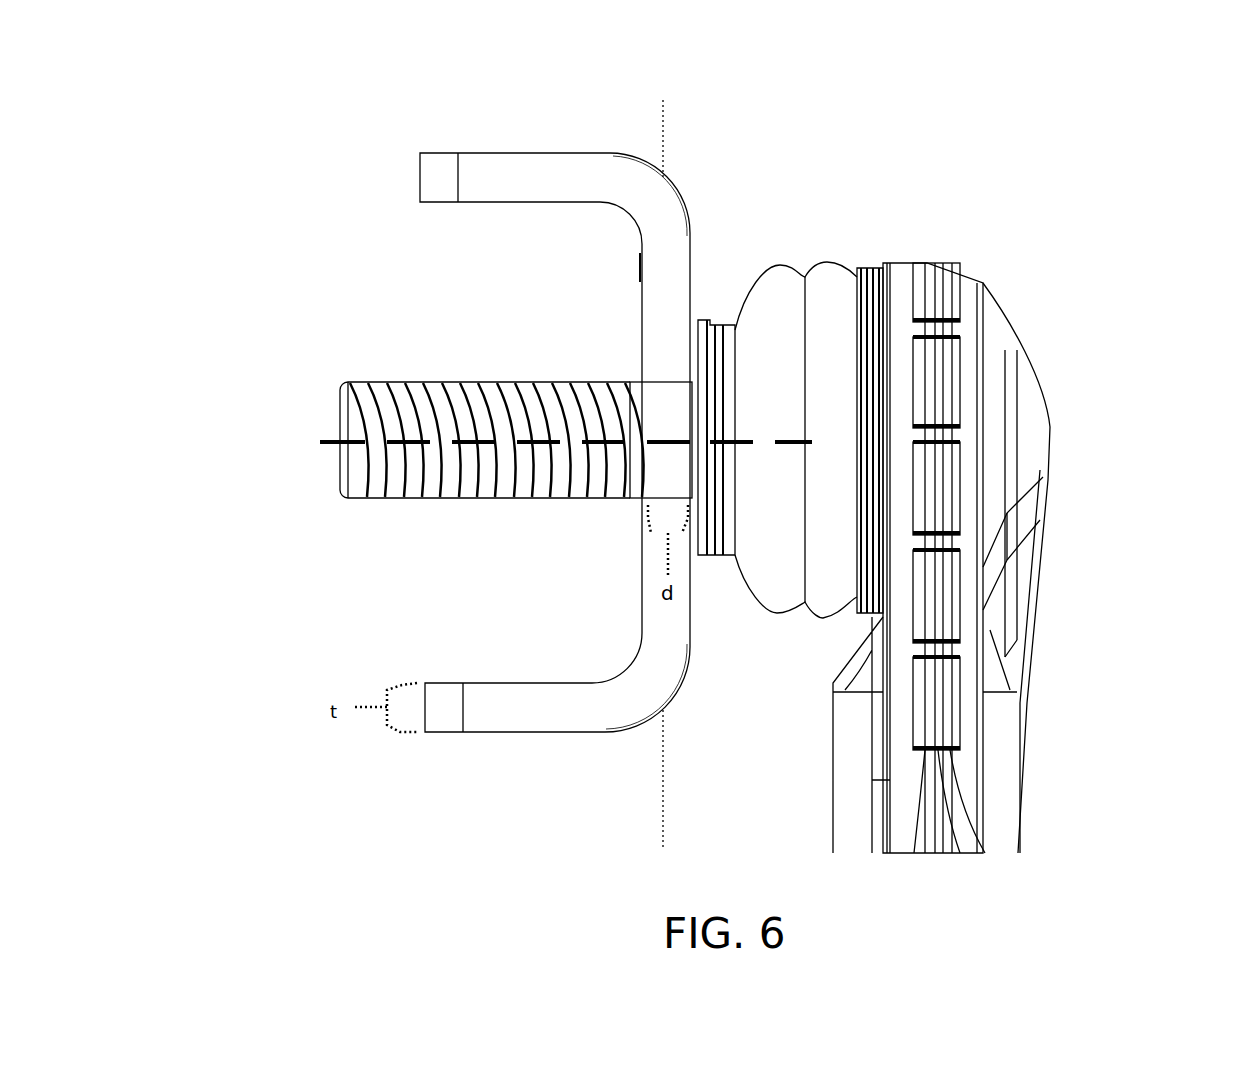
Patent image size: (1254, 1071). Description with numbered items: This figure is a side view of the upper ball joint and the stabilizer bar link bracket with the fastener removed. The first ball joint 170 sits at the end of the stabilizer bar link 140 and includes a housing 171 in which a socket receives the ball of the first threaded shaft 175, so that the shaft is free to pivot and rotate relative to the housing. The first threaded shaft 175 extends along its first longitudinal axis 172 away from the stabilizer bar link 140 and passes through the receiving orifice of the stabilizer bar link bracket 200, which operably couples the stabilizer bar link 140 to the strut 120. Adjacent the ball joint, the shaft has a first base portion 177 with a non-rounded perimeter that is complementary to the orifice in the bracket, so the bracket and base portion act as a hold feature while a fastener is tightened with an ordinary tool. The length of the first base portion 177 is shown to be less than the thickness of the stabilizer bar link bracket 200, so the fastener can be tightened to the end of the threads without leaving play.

The strut 120 is at (622, 120).
The stabilizer bar link bracket 200 is at (515, 172).
The stabilizer bar link 140 is at (1070, 698).
The first ball joint 170 is at (907, 531).
The housing 171 is at (968, 318).
The first longitudinal axis 172 is at (330, 442).
The first threaded shaft 175 is at (437, 400).
The first base portion 177 is at (668, 402).